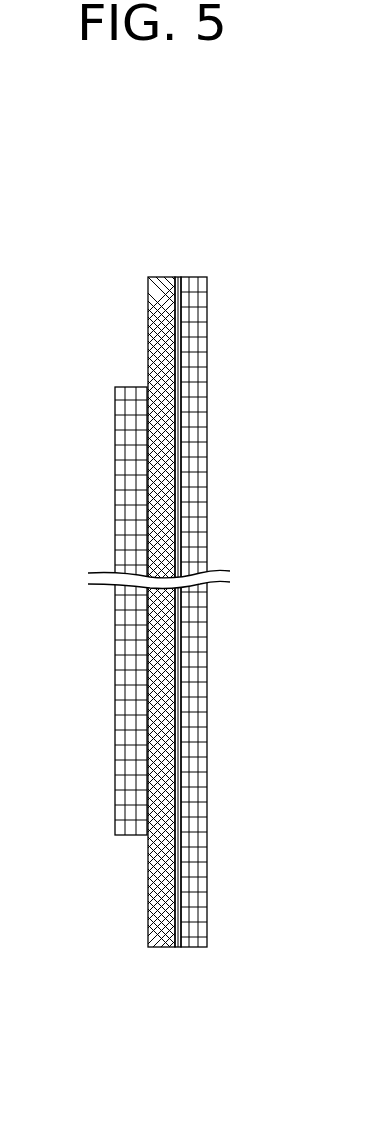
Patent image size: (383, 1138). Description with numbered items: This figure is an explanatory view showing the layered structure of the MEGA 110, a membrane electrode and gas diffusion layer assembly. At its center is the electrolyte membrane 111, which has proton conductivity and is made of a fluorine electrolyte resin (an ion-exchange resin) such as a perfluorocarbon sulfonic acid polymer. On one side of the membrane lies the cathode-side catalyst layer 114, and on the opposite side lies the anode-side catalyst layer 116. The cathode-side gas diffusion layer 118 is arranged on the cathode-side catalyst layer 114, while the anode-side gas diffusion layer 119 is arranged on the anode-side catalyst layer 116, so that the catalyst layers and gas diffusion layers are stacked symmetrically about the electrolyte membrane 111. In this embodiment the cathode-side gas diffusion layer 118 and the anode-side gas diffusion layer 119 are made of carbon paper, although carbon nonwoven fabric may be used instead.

The MEGA 110 is at (64, 284).
The electrolyte membrane 111 is at (162, 277).
The cathode-side catalyst layer 114 is at (143, 387).
The anode-side catalyst layer 116 is at (177, 277).
The cathode-side gas diffusion layer 118 is at (115, 443).
The anode-side gas diffusion layer 119 is at (208, 440).